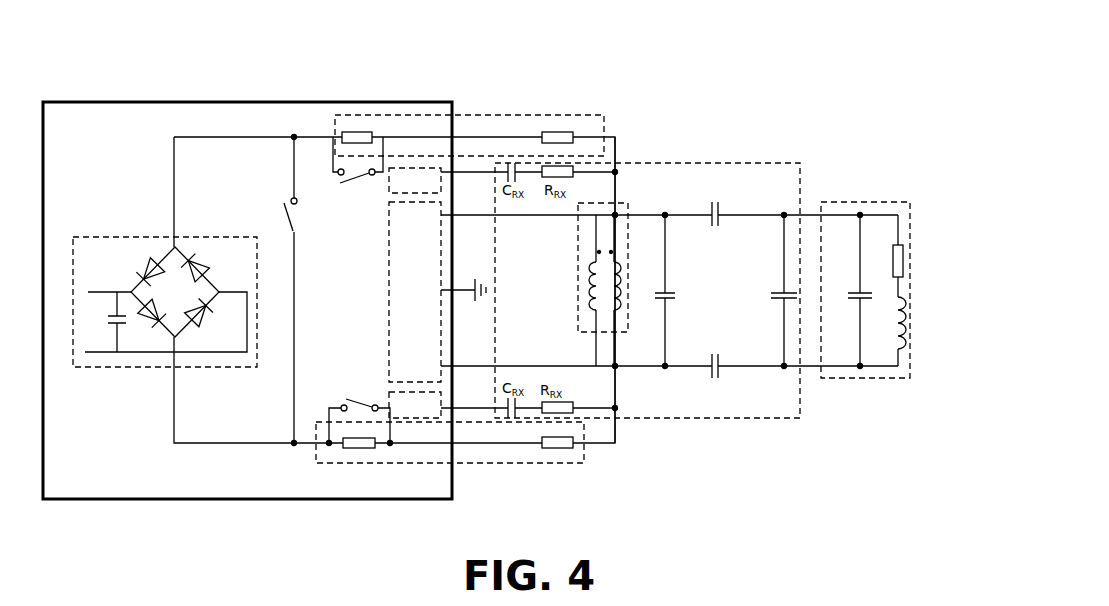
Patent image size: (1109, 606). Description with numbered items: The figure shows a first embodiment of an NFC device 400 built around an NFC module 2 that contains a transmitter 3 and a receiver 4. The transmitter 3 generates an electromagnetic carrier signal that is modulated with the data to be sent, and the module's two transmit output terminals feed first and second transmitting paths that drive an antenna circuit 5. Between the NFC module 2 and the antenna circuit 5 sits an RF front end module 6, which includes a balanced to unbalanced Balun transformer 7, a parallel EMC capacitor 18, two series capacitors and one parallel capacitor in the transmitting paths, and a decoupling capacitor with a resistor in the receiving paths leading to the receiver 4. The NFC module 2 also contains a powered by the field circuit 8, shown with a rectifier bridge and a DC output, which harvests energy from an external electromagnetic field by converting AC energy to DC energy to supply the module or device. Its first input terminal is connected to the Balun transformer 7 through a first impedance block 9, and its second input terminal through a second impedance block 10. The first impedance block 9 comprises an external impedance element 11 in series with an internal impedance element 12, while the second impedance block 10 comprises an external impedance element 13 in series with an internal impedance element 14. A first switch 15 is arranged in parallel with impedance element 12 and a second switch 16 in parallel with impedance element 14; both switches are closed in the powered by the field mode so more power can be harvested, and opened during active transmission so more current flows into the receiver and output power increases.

The NFC module 2 is at (148, 101).
The transmitter 3 is at (388, 300).
The receiver 4 is at (388, 192).
The antenna circuit 5 is at (912, 200).
The RF front end module 6 is at (706, 162).
The balanced to unbalanced (Balun) transformer 7 is at (628, 265).
The powered by the field circuit 8 is at (126, 238).
The first impedance block 9 is at (485, 114).
The second impedance block 10 is at (498, 465).
The impedance element 11 is at (557, 130).
The impedance element 12 is at (352, 130).
The impedance element 13 is at (562, 450).
The impedance element 14 is at (360, 450).
The first switch 15 is at (343, 188).
The second switch 16 is at (348, 398).
The parallel capacitor C_EMC 18 is at (668, 290).
The NFC device 400 is at (613, 97).